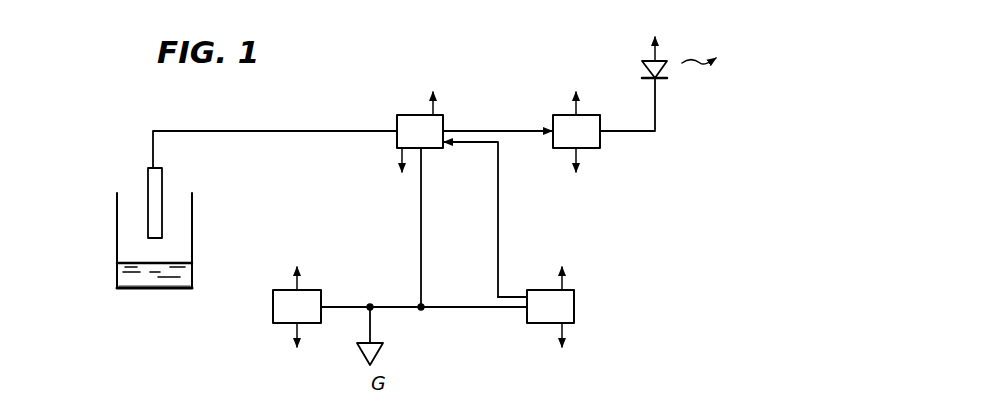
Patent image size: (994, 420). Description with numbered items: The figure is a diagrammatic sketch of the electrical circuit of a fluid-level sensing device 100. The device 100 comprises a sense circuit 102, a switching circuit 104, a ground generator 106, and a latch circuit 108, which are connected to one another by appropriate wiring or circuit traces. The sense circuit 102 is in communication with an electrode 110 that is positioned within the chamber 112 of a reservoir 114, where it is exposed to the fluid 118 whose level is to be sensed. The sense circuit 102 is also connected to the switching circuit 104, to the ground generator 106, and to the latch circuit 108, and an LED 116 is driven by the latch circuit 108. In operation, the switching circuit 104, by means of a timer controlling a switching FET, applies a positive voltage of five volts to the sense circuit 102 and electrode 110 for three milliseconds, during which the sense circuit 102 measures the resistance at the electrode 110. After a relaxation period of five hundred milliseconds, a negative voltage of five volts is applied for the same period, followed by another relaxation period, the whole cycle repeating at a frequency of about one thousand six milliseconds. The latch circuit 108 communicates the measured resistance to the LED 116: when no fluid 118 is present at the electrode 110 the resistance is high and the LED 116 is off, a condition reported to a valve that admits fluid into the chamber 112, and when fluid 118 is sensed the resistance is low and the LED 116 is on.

The device 100 is at (664, 228).
The sense circuit 102 is at (412, 132).
The switching circuit 104 is at (554, 308).
The ground generator 106 is at (295, 308).
The latch circuit 108 is at (574, 132).
The electrode 110 is at (146, 192).
The chamber 112 is at (173, 217).
The reservoir 114 is at (116, 245).
The LED 116 is at (640, 68).
The fluid 118 is at (142, 280).